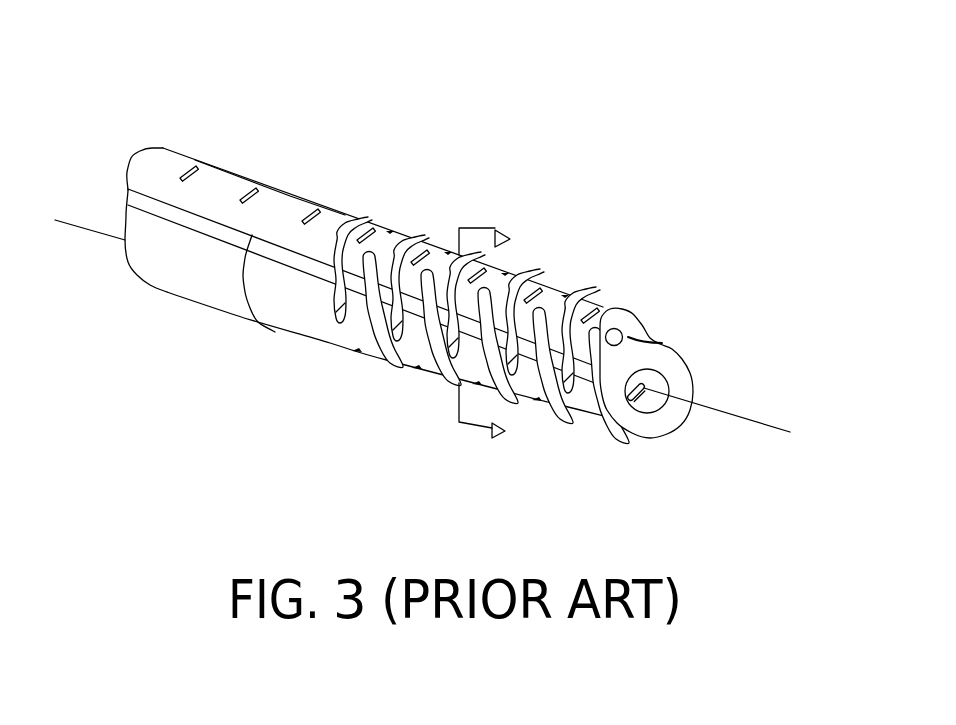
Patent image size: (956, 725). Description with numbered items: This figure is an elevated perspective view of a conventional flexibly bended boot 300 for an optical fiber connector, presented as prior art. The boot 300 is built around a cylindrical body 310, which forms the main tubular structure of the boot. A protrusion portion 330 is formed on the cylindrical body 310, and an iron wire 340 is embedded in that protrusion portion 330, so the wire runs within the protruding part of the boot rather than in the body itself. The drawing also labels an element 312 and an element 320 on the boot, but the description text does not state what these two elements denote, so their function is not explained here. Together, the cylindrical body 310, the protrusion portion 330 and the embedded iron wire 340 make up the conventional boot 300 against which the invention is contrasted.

The flexibly bended boot 300 is at (428, 280).
The cylindrical body 310 is at (622, 417).
The slot in distal lumen 312 is at (657, 403).
The pull wire 320 is at (723, 410).
The protrusion portion 330 is at (626, 322).
The iron wire 340 is at (656, 346).